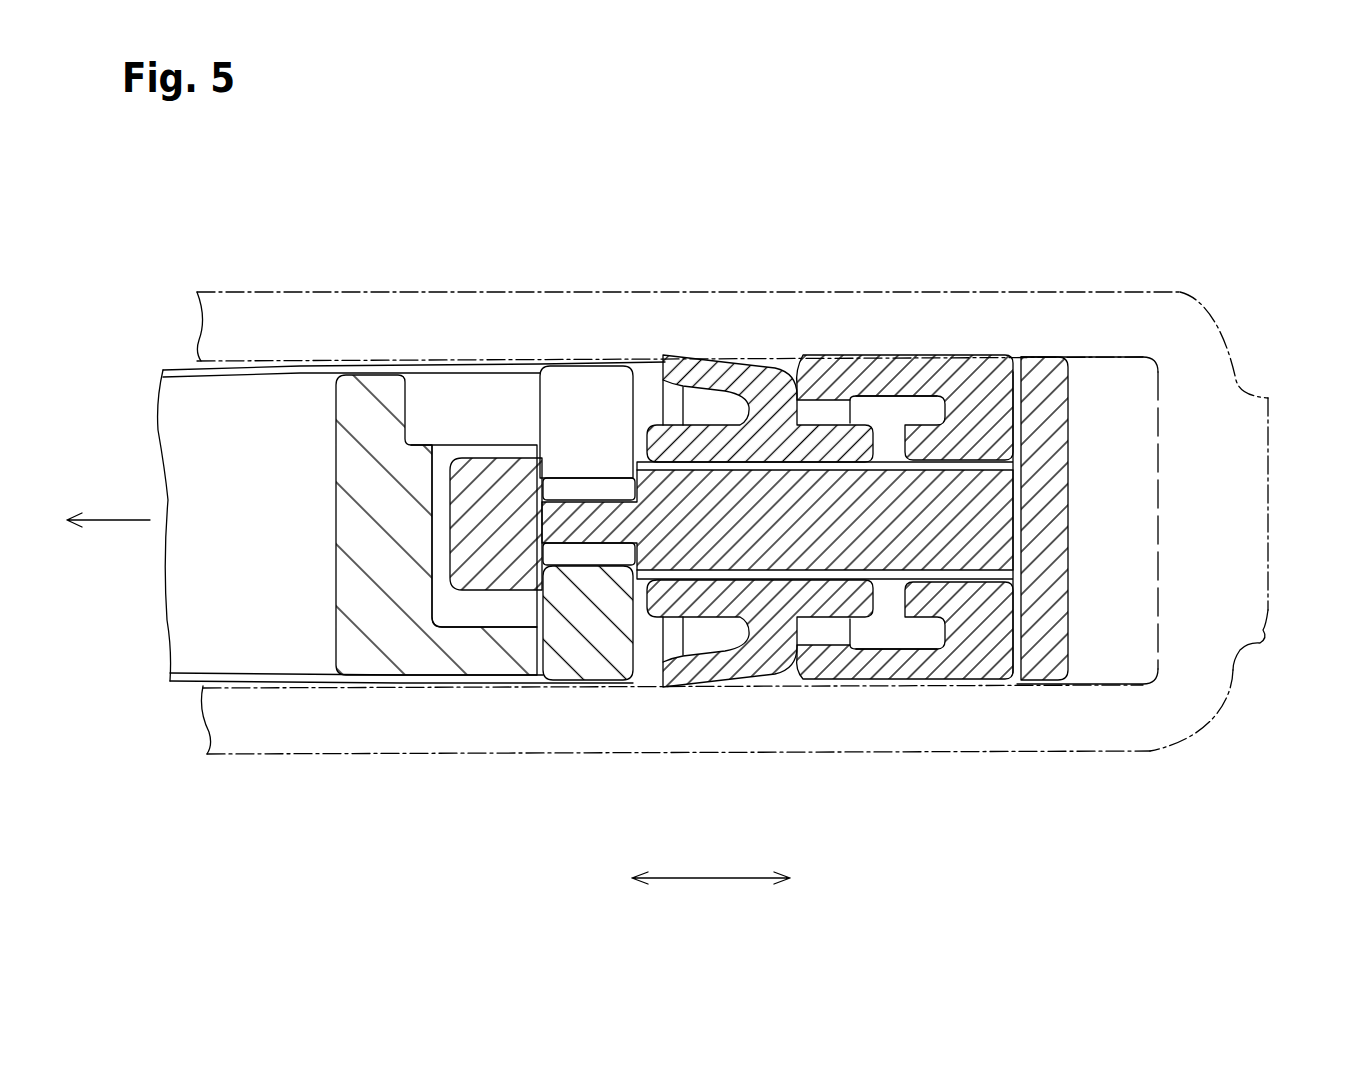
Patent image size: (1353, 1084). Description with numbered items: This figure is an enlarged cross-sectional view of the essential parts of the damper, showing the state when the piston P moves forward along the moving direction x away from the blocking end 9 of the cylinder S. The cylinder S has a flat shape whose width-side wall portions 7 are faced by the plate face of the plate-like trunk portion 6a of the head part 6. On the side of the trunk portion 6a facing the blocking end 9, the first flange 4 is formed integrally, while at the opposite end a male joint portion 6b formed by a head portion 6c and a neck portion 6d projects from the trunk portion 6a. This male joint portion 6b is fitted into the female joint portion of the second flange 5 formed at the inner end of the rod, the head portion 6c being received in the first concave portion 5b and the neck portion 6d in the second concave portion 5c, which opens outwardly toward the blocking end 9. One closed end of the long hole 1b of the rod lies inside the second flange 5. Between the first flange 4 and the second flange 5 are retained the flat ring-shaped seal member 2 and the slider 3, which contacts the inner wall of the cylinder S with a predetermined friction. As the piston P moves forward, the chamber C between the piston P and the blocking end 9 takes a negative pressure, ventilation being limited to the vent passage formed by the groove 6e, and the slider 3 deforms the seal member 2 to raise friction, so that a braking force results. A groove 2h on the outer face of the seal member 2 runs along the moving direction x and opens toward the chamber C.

The long hole 1b is at (193, 410).
The seal member 2 is at (909, 503).
The groove 2h is at (925, 679).
The slider 3 is at (754, 660).
The first flange 4 is at (1052, 672).
The second flange 5 is at (484, 597).
The first concave portion 5b is at (455, 617).
The second concave portion 5c is at (568, 567).
The head part 6 is at (769, 511).
The trunk portion 6a is at (848, 497).
The male joint portion 6b is at (473, 406).
The head portion 6c is at (487, 465).
The neck portion 6d is at (612, 515).
The groove 6e is at (893, 467).
The width-side wall portions 7 is at (842, 755).
The blocking end 9 is at (1225, 536).
The cylinder S is at (650, 290).
The piston P is at (1077, 393).
The chamber C is at (1117, 403).
The moving direction x is at (733, 882).